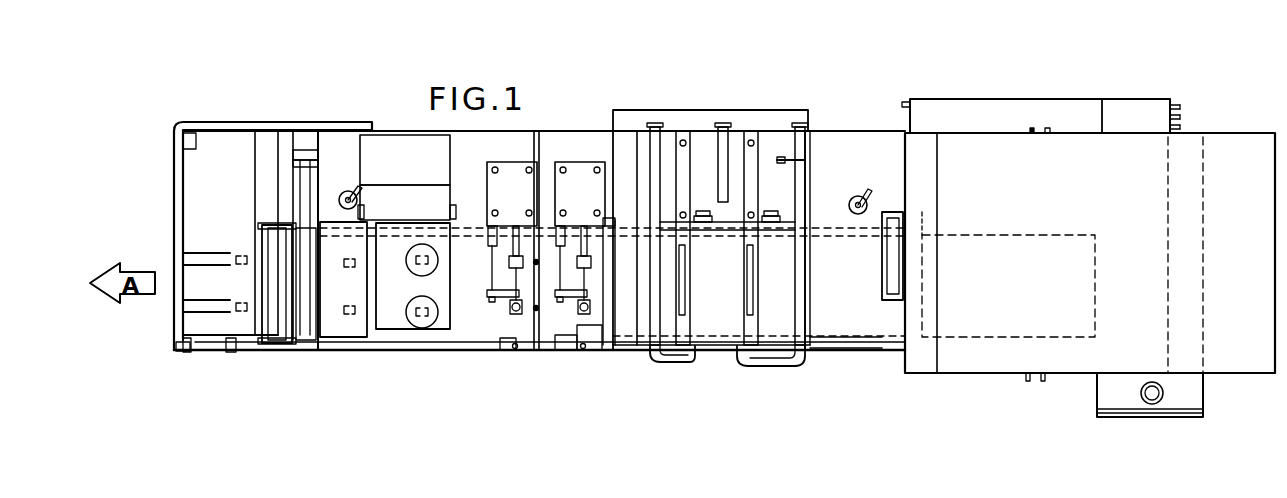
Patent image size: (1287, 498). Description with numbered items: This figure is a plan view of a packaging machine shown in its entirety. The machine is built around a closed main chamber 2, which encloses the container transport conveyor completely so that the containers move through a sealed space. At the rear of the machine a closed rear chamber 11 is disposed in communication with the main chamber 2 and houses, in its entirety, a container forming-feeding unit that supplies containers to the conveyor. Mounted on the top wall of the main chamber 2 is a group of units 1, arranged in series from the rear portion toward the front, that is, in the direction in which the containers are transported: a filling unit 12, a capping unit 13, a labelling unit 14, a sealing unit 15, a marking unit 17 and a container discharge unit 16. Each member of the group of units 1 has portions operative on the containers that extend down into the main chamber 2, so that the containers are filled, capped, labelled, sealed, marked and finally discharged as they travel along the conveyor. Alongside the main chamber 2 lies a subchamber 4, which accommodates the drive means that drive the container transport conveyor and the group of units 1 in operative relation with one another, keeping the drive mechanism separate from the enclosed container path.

The group of units 1 is at (320, 99).
The main chamber 2 is at (862, 301).
The subchamber 4 is at (858, 185).
The rear chamber 11 is at (911, 131).
The filling unit 12 is at (674, 334).
The capping unit 13 is at (572, 325).
The labelling unit 14 is at (509, 322).
The sealing unit 15 is at (428, 330).
The container discharge unit 16 is at (286, 338).
The marking unit 17 is at (343, 333).